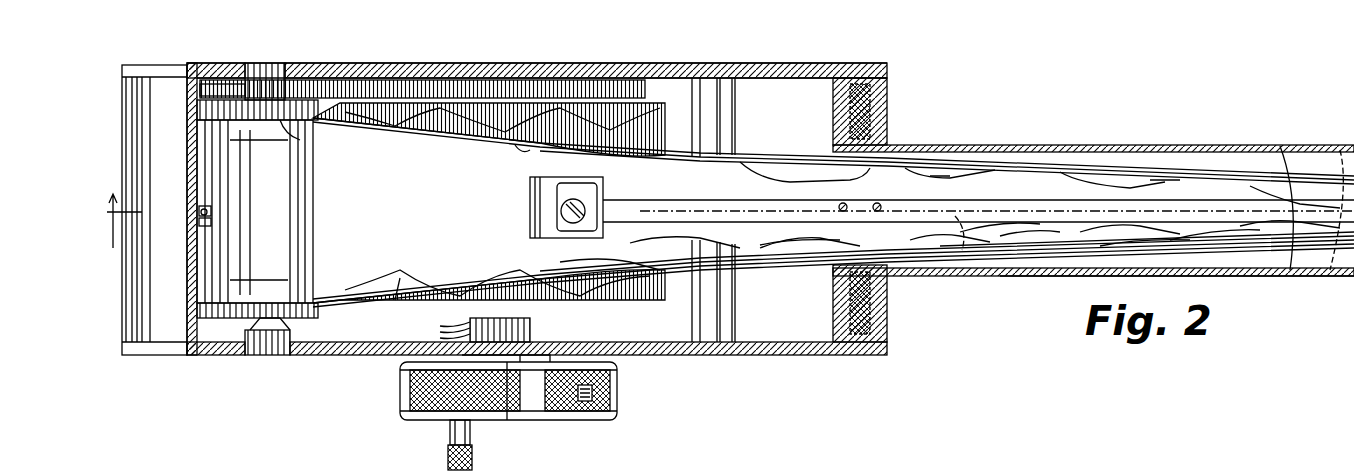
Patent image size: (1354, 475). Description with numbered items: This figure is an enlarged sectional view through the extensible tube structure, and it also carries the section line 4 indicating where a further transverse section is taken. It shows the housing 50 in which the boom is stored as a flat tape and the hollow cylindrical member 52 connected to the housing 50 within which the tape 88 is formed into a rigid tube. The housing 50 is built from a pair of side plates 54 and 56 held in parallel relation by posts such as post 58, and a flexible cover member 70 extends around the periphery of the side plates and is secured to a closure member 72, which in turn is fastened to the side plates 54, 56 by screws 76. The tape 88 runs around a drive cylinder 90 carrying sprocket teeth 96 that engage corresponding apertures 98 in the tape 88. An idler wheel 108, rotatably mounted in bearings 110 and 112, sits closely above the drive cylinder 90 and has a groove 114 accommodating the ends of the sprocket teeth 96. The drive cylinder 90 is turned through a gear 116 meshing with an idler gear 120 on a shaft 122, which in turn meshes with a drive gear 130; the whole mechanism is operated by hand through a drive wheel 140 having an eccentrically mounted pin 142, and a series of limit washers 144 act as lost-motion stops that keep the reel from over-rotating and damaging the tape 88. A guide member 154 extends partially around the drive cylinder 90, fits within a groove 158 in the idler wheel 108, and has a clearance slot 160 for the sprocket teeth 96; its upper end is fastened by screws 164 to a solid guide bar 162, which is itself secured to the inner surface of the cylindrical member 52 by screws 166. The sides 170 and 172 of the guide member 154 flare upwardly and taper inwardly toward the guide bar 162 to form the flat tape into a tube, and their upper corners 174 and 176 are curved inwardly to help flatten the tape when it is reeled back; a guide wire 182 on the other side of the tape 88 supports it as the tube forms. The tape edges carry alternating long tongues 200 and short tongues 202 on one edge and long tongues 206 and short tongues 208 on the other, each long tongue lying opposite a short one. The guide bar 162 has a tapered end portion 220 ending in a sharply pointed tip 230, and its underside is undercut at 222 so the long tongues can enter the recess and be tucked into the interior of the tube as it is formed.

The section line 4- 4 is at (123, 230).
The housing 50 is at (678, 62).
The hollow cylindrical member 52 is at (1255, 278).
The side plate 54 is at (780, 352).
The side plate 56 is at (758, 62).
The post 58 is at (706, 340).
The flexible cover member 70 is at (128, 325).
The closure member 72 is at (888, 108).
The screws 76 is at (888, 82).
The tape 88 is at (650, 300).
The drive cylinder 90 is at (205, 318).
The sprocket teeth 96 is at (200, 212).
The apertures 98 is at (199, 224).
The idler wheel 108 is at (245, 318).
The bearing 110 is at (250, 352).
The bearing 112 is at (258, 75).
The groove 114 is at (305, 203).
The gear 116 is at (208, 78).
The idler gear 120 is at (345, 102).
The shaft 122 is at (335, 325).
The drive gear 130 is at (632, 80).
The drive wheel 140 is at (618, 400).
The eccentrically mounted pin 142 is at (450, 432).
The limit washers 144 is at (474, 330).
The guide member 154 is at (536, 178).
The groove 158 is at (300, 142).
The clearance slot 160 is at (200, 206).
The guide bar 162 is at (652, 205).
The screws 164 is at (585, 200).
The screws 166 is at (840, 212).
The side of guide member 170 is at (445, 130).
The side of guide member 172 is at (410, 310).
The upper corner 174 is at (515, 152).
The upper corner 176 is at (528, 272).
The guide wire 182 is at (507, 362).
The long tongues 200 is at (575, 118).
The short tongues 202 is at (540, 118).
The long tongues 206 is at (480, 290).
The short tongues 208 is at (620, 300).
The tapered end portion 220 is at (1170, 180).
The undercut 222 is at (968, 262).
The tip 230 is at (1295, 148).